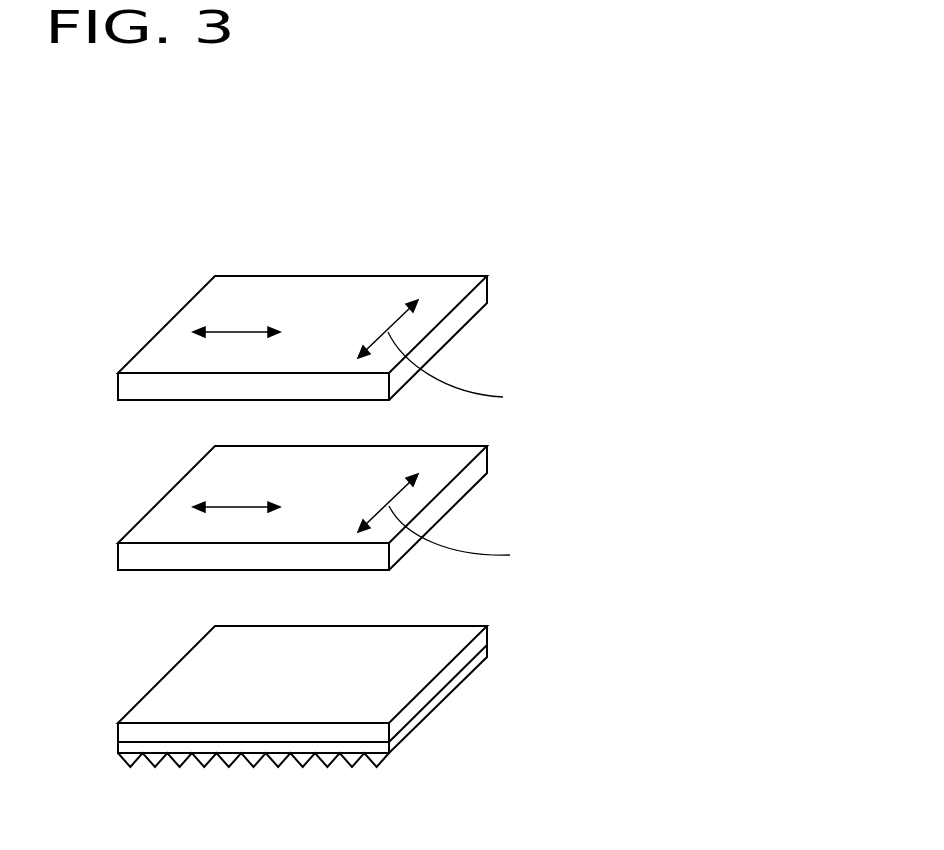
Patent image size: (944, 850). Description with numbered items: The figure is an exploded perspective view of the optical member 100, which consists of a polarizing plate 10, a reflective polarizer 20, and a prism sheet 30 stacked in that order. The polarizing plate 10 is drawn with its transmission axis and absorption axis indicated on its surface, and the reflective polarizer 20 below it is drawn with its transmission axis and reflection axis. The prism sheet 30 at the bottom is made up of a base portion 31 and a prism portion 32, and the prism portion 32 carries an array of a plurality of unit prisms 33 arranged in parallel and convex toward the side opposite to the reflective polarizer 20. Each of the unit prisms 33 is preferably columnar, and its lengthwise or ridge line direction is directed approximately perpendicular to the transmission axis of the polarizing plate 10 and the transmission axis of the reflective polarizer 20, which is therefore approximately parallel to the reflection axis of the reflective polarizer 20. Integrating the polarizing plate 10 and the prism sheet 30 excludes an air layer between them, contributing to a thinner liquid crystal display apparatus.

The optical member 100 is at (508, 232).
The polarizing plate 10 is at (467, 315).
The reflective polarizer 20 is at (473, 472).
The prism sheet 30 is at (368, 719).
The base portion 31 is at (485, 638).
The prism portion 32 is at (487, 650).
The unit prisms 33 is at (353, 758).